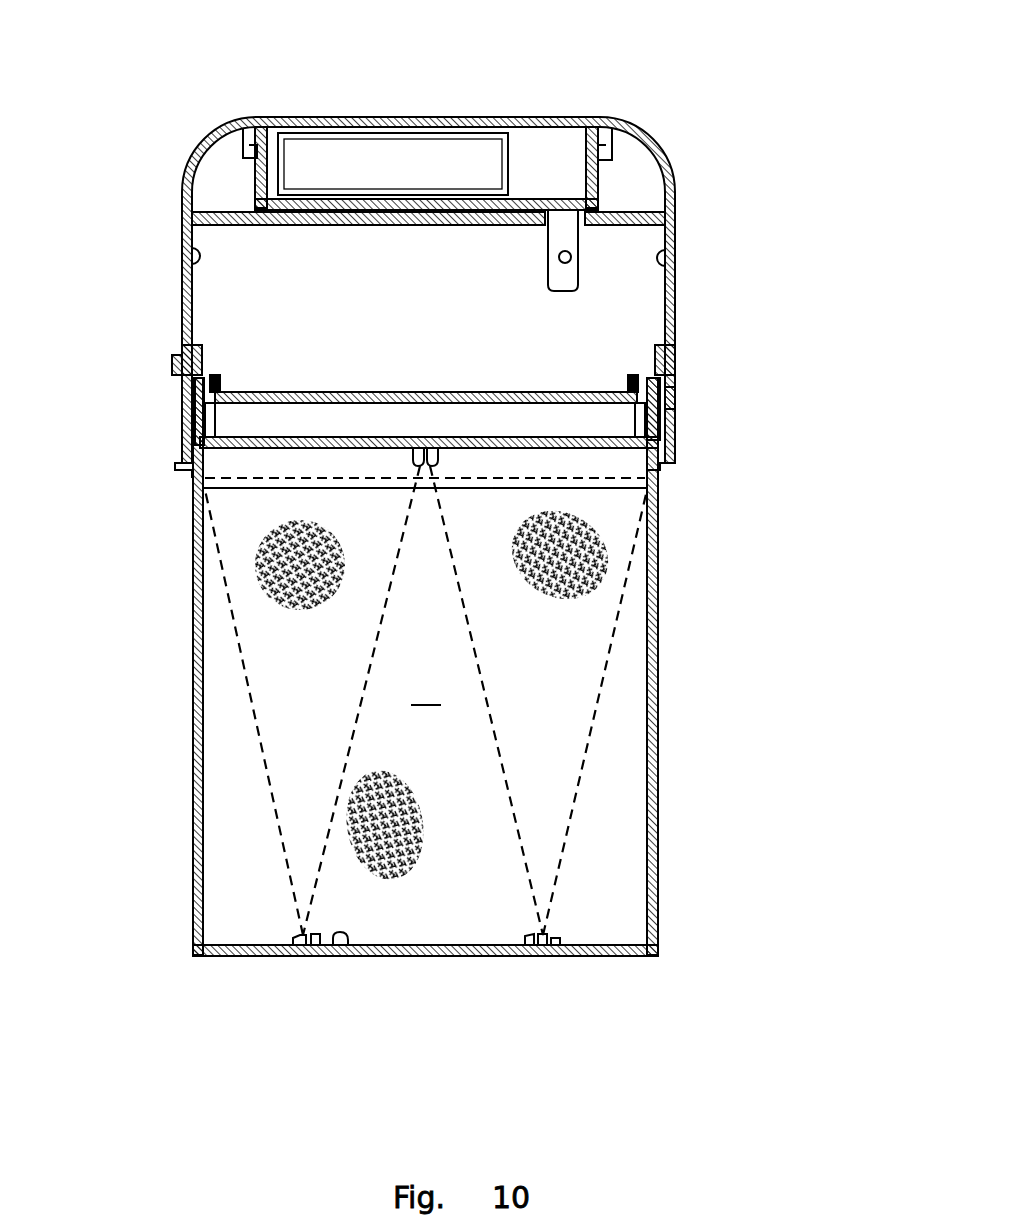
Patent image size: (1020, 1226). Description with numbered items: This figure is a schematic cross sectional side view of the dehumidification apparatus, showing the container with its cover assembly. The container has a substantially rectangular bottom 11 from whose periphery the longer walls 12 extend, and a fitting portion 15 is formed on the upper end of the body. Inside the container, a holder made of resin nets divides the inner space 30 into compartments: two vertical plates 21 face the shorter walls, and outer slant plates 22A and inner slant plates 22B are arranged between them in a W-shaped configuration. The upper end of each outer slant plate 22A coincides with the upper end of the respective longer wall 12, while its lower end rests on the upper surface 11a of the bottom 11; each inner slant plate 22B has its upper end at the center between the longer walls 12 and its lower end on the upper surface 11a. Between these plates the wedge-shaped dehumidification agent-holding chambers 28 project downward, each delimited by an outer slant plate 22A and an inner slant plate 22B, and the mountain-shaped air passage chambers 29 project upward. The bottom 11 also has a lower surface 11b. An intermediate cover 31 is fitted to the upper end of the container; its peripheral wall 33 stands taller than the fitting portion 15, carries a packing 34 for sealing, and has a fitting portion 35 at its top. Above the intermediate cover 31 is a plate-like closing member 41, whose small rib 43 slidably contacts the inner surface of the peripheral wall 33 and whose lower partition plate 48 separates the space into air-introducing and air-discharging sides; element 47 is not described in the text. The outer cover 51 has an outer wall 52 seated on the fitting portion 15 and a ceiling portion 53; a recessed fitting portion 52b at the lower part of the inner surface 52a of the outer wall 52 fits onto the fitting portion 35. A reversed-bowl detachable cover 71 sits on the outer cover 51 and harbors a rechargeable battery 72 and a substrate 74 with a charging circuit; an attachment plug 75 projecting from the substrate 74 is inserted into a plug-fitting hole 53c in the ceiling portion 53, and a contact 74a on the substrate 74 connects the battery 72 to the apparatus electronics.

The detachable cover 71 is at (300, 116).
The rechargeable battery 72 is at (392, 152).
The substrate 74 is at (525, 198).
The contact 74a is at (288, 212).
The ceiling portion 53 is at (632, 216).
The plug-fitting hole 53c is at (590, 245).
The outer wall 52 is at (183, 272).
The inner surface of the outer wall 52a is at (188, 256).
The recessed fitting portion 52b is at (184, 350).
The outer cover 51 is at (811, 275).
The attachment plug 75 is at (576, 272).
The fitting portion 35 is at (178, 372).
The peripheral wall 33 is at (198, 405).
The fitting portion 15 is at (200, 420).
The packing 34 is at (186, 455).
The small rib 43 is at (217, 382).
The upper plate 47 is at (466, 398).
The lower partition plate 48 is at (332, 414).
The closing member 41 is at (563, 398).
The intermediate cover 31 is at (266, 448).
The inner space 30 is at (479, 882).
The inner slant plate 22B is at (380, 628).
The outer slant plate 22A is at (262, 714).
The vertical plate 21 is at (428, 690).
The longer wall 12 is at (194, 795).
The dehumidification agent-holding chamber 28 is at (322, 735).
The bottom 11 is at (236, 957).
The upper surface of the bottom 11a is at (343, 947).
The lower surface of the bottom 11b is at (492, 947).
The air passage chamber 29 is at (262, 903).